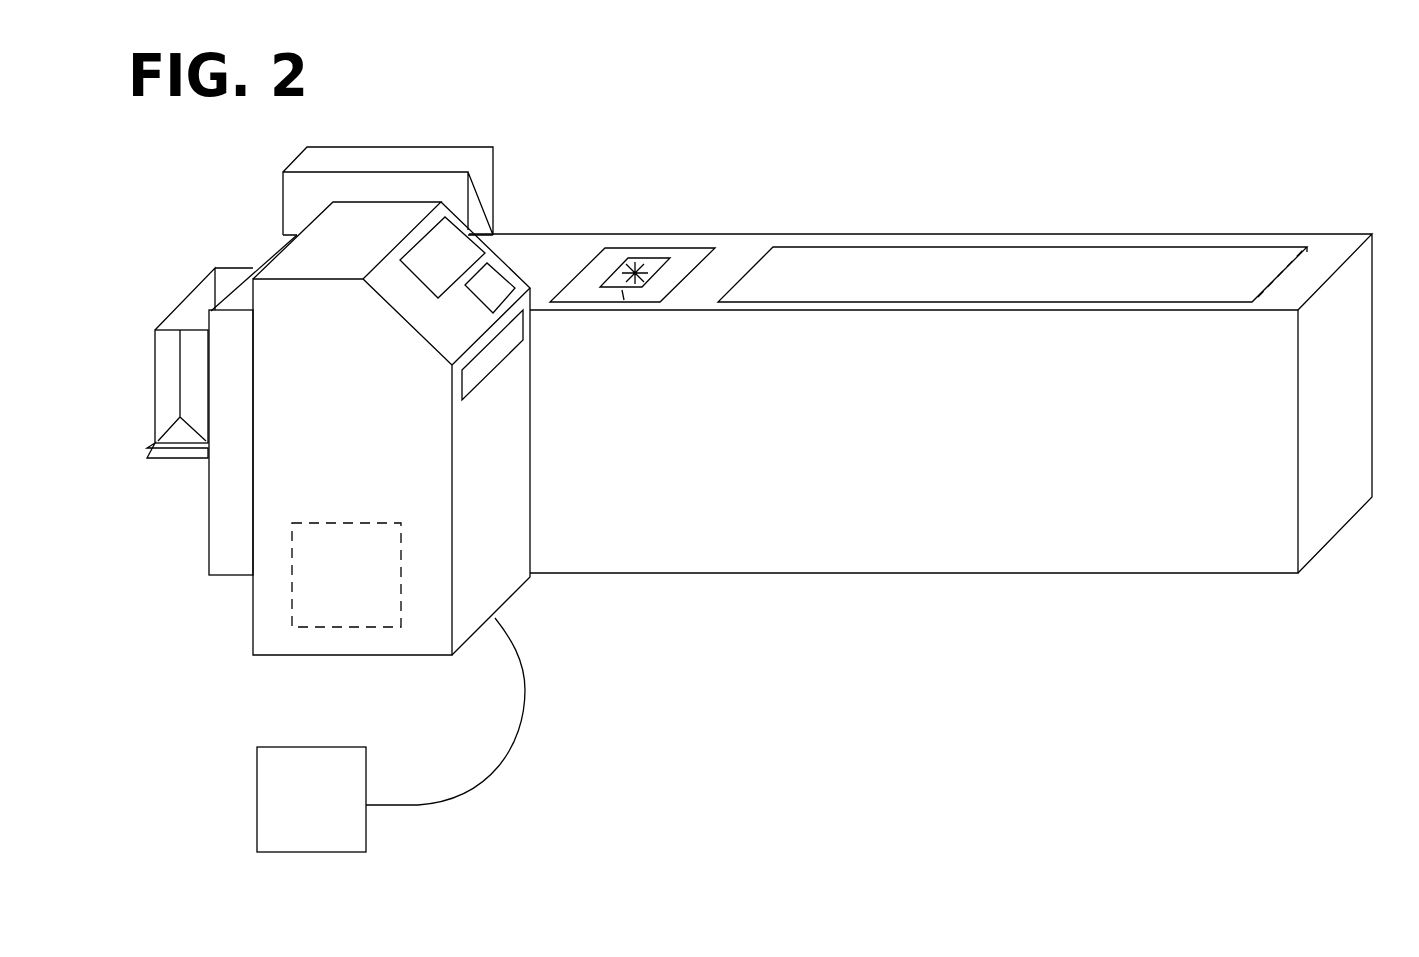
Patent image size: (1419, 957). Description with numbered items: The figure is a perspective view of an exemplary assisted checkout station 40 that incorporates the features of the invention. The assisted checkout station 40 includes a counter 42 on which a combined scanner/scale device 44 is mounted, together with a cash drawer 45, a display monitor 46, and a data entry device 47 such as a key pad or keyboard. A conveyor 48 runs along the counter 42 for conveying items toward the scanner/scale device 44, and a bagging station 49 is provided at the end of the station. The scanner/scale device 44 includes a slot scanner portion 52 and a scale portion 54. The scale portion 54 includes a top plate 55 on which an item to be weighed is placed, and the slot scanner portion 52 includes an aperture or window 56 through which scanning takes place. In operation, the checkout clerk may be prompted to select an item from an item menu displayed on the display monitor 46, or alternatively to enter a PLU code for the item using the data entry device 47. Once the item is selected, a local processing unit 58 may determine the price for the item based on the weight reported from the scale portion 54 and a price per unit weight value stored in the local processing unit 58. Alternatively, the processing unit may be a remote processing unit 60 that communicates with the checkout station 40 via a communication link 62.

The assisted checkout station 40 is at (1121, 97).
The counter 42 is at (1338, 245).
The combined scanner/scale device 44 is at (705, 172).
The cash drawer 45 is at (488, 365).
The display monitor 46 is at (448, 247).
The data entry device 47 is at (492, 285).
The conveyor 48 is at (1158, 262).
The bagging station 49 is at (176, 240).
The slot scanner portion 52 is at (624, 320).
The scale portion 54 is at (688, 317).
The top plate 55 is at (608, 260).
The aperture or window 56 is at (648, 267).
The local processing unit 58 is at (292, 600).
The remote processing unit 60 is at (257, 767).
The communication link 62 is at (500, 767).